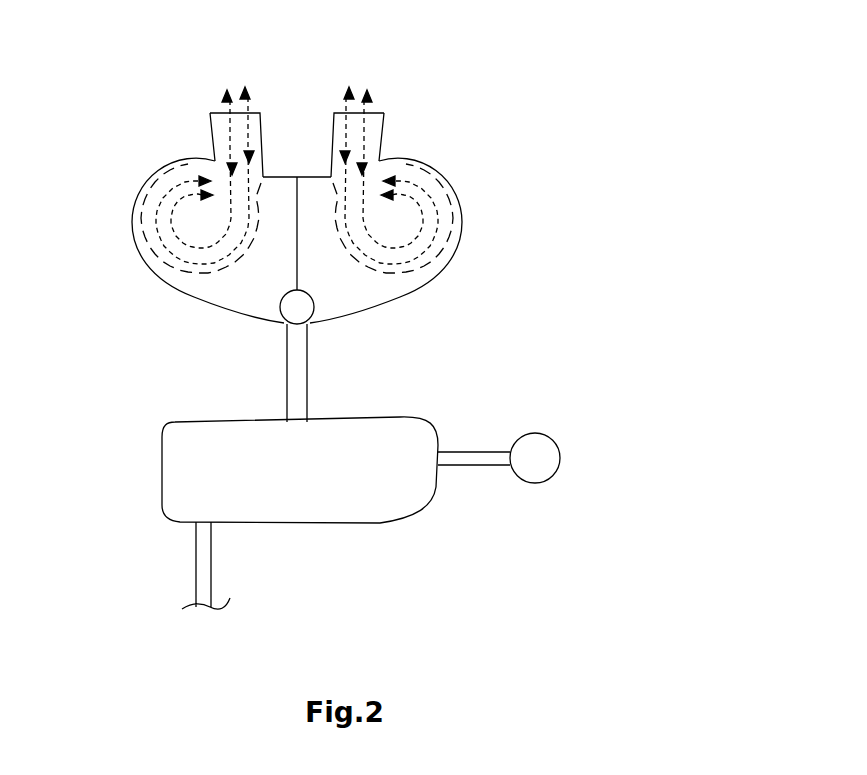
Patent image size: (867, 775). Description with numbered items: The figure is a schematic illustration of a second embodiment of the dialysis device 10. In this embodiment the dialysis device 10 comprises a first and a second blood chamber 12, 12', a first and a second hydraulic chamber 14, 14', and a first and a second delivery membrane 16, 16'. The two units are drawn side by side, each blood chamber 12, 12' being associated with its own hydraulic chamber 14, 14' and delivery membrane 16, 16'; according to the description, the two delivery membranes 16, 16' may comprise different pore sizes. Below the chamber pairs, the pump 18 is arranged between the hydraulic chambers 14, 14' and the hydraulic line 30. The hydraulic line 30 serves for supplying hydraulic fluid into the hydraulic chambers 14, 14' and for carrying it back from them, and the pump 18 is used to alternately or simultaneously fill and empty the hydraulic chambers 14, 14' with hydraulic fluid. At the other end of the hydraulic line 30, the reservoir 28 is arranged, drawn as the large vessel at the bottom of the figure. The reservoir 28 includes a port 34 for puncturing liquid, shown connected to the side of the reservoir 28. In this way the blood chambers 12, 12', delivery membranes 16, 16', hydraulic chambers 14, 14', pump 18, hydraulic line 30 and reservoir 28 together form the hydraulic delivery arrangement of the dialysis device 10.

The dialysis device 10 is at (630, 278).
The first blood chamber 12 is at (195, 132).
The second blood chamber 12' is at (433, 132).
The first hydraulic chamber 14 is at (208, 257).
The second hydraulic chamber 14' is at (413, 241).
The first delivery membrane 16 is at (164, 185).
The second delivery membrane 16' is at (447, 185).
The pump 18 is at (293, 309).
The reservoir 28 is at (322, 493).
The hydraulic line 30 is at (297, 375).
The port 34 is at (538, 455).